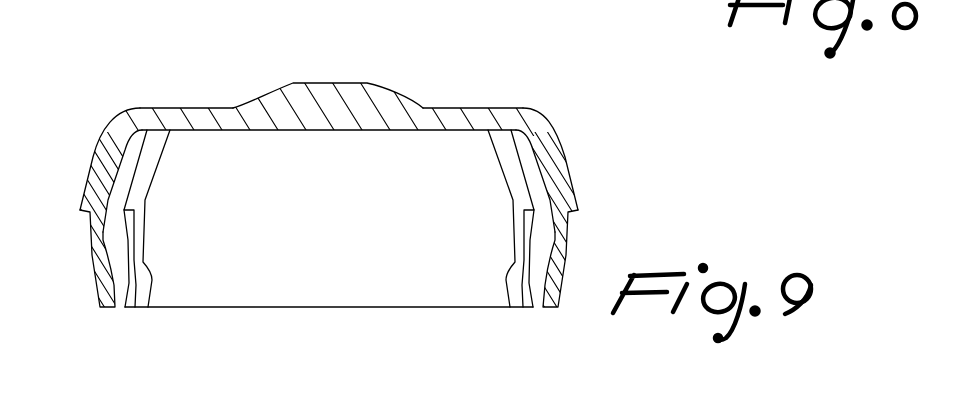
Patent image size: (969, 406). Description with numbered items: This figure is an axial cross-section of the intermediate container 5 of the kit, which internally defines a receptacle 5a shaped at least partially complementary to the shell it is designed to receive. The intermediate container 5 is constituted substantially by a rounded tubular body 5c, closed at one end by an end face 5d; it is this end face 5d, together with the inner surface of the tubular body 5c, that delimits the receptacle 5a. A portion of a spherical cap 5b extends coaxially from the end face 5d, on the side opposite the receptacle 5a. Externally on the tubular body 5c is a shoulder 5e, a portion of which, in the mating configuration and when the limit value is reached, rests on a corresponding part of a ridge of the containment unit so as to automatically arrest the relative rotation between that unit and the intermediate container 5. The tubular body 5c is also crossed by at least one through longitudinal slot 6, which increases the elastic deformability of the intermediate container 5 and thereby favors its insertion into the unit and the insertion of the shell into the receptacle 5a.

The intermediate container 5 is at (359, 193).
The receptacle 5a is at (318, 228).
The portion of a spherical cap 5b is at (413, 90).
The tubular body 5c is at (576, 191).
The end face 5d is at (200, 122).
The shoulder 5e is at (85, 212).
The through longitudinal slot 6 is at (127, 228).